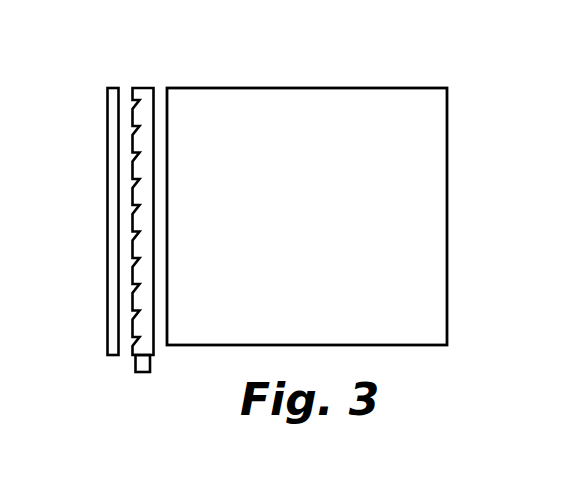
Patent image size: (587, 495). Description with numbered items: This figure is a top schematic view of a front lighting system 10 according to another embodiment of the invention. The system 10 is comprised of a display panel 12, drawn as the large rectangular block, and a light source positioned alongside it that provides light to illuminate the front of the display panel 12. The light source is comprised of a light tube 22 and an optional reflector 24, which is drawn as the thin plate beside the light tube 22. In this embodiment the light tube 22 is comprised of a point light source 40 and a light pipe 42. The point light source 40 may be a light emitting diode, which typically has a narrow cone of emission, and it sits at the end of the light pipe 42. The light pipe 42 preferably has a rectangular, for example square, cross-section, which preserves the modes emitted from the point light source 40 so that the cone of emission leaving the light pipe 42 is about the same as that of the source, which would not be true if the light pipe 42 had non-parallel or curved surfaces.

The front lighting system 10 is at (390, 48).
The display panel 12 is at (449, 113).
The light tube 22 is at (182, 194).
The reflector 24 is at (106, 330).
The point light source 40 is at (150, 360).
The light pipe 42 is at (143, 166).